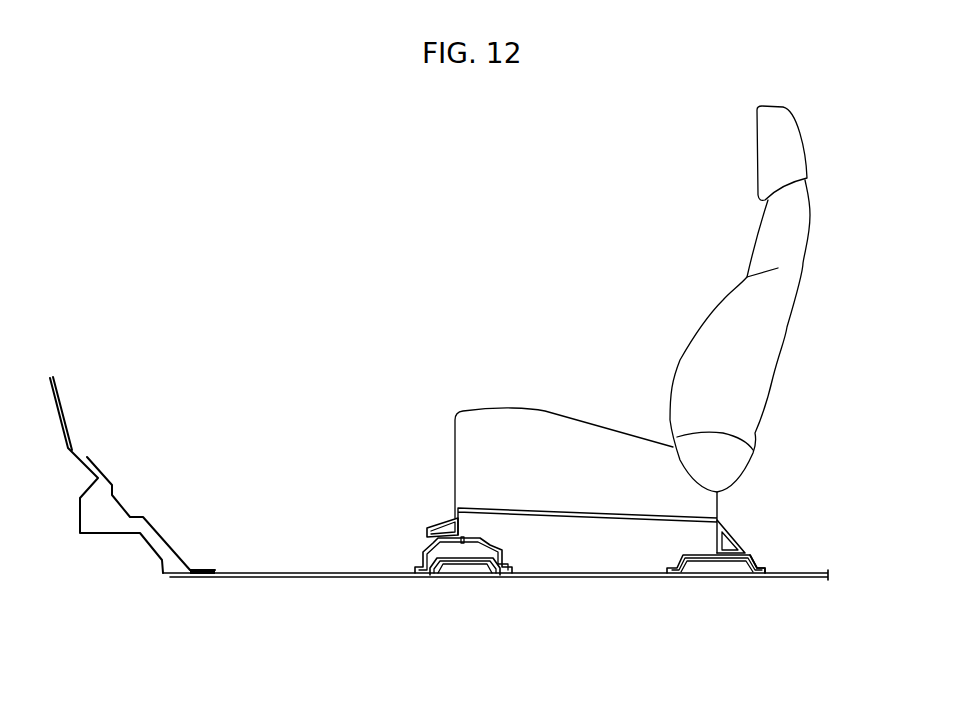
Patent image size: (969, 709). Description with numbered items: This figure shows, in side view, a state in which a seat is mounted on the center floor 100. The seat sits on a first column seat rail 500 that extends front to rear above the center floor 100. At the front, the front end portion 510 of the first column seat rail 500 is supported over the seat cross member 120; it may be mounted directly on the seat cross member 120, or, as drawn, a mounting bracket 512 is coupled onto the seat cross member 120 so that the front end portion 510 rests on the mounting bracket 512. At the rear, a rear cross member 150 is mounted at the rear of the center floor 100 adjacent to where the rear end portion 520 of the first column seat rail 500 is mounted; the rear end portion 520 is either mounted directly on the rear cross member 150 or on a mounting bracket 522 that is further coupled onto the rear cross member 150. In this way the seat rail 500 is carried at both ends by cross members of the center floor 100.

The center floor 100 is at (622, 577).
The seat cross member 120 is at (465, 562).
The rear cross member 150 is at (710, 560).
The first column seat rail 500 is at (553, 517).
The front end portion 510 is at (443, 520).
The mounting bracket 512 is at (420, 547).
The rear end portion 520 is at (740, 520).
The mounting bracket 522 is at (753, 555).